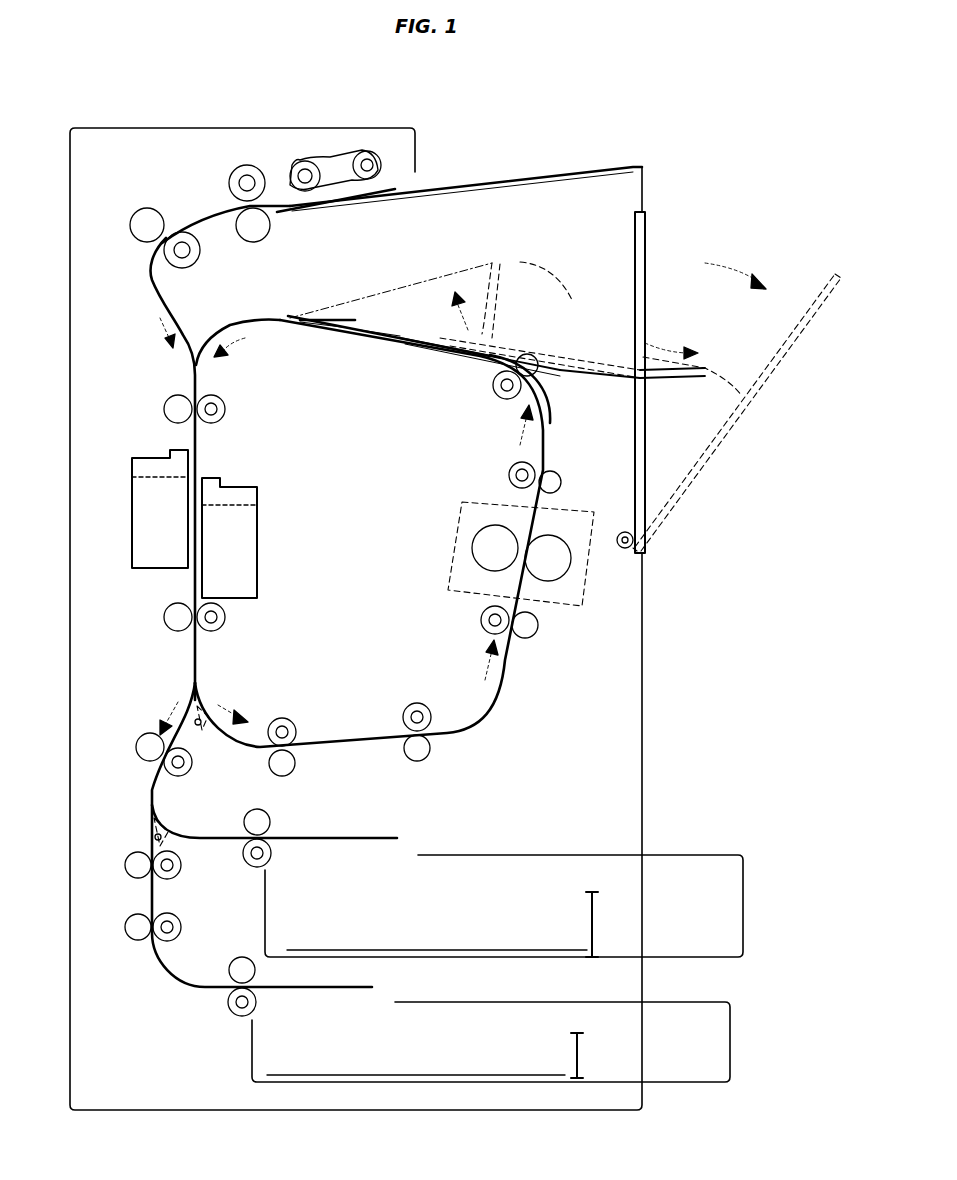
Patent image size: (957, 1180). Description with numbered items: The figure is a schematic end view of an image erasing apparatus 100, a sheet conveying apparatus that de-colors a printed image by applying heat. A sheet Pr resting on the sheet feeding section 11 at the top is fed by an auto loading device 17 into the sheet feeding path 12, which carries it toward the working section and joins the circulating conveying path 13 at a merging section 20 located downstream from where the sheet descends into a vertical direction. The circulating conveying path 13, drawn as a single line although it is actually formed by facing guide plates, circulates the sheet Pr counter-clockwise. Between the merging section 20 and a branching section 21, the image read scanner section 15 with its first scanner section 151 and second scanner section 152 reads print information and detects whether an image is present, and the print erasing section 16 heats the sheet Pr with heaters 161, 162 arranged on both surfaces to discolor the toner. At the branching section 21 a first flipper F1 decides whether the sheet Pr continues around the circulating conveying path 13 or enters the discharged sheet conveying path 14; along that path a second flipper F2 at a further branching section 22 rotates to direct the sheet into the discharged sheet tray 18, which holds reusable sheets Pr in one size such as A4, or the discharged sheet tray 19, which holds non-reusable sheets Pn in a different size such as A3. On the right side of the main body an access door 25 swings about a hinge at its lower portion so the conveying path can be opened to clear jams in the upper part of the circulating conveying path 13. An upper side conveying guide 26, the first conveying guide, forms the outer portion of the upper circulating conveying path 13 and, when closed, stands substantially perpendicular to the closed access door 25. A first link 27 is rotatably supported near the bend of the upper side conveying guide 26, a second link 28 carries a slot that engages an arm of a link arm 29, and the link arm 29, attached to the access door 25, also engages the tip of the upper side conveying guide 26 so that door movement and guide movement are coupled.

The image erasing apparatus 100 is at (706, 735).
The sheet feeding section 11 is at (480, 162).
The sheet feeding path 12 is at (193, 200).
The circulating conveying path 13 is at (508, 708).
The discharged sheet conveying path 14 is at (135, 778).
The image read scanner section 15 is at (218, 512).
The first scanner section 151 is at (140, 456).
The second scanner section 152 is at (258, 532).
The print erasing section 16 is at (513, 534).
The heater 161 is at (492, 525).
The heater 162 is at (565, 535).
The auto loading device 17 is at (345, 138).
The discharged sheet tray 18 is at (748, 910).
The discharged sheet tray 19 is at (736, 1043).
The merging section 20 is at (196, 358).
The branching section 21 is at (200, 686).
The branching section 22 is at (148, 800).
The access door 25 is at (650, 240).
The upper side conveying guide 26 is at (378, 318).
The first link 27 is at (452, 355).
The second link 28 is at (568, 372).
The link arm 29 is at (640, 380).
The first flipper F1 is at (204, 728).
The second flipper F2 is at (168, 840).
The sheet Pr is at (545, 165).
The non-reusable sheet Pn is at (437, 1072).